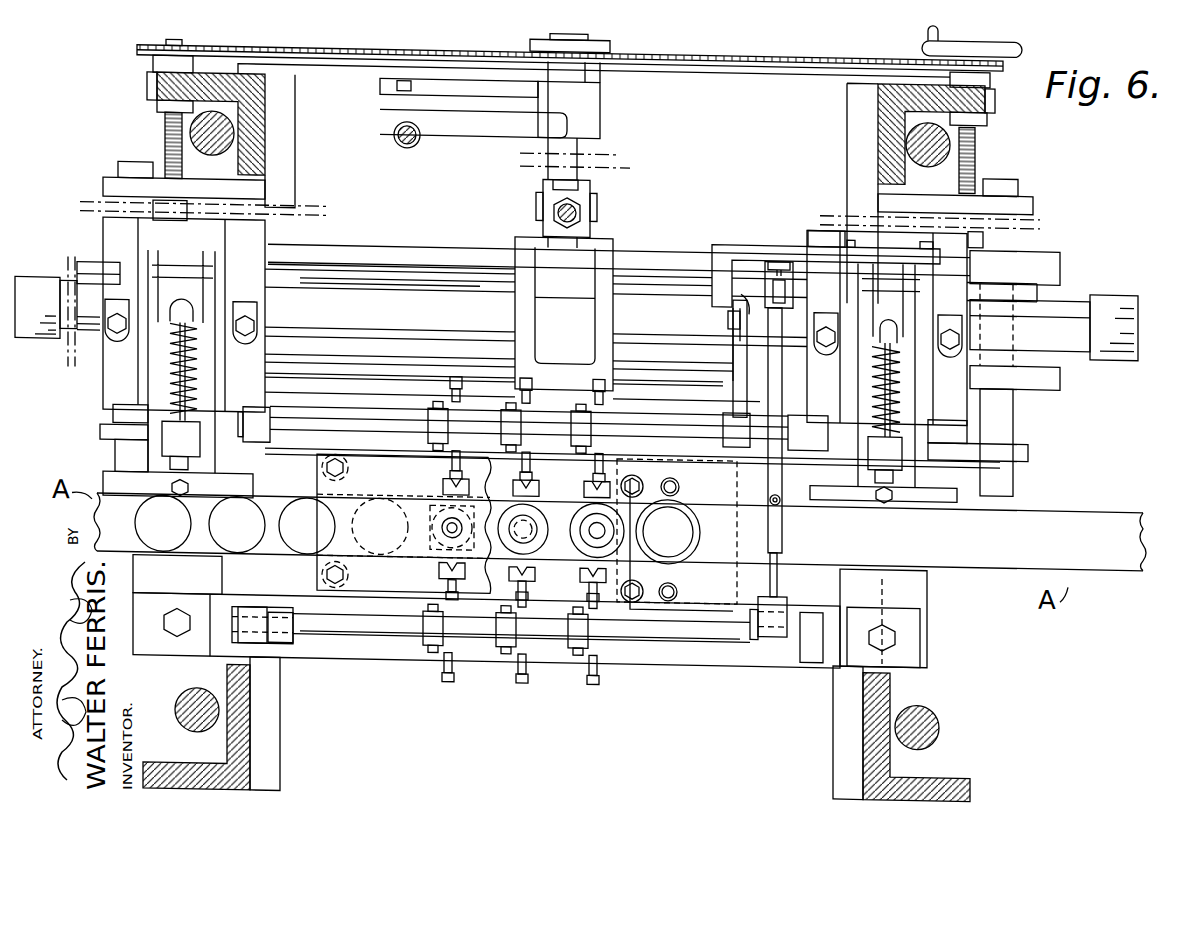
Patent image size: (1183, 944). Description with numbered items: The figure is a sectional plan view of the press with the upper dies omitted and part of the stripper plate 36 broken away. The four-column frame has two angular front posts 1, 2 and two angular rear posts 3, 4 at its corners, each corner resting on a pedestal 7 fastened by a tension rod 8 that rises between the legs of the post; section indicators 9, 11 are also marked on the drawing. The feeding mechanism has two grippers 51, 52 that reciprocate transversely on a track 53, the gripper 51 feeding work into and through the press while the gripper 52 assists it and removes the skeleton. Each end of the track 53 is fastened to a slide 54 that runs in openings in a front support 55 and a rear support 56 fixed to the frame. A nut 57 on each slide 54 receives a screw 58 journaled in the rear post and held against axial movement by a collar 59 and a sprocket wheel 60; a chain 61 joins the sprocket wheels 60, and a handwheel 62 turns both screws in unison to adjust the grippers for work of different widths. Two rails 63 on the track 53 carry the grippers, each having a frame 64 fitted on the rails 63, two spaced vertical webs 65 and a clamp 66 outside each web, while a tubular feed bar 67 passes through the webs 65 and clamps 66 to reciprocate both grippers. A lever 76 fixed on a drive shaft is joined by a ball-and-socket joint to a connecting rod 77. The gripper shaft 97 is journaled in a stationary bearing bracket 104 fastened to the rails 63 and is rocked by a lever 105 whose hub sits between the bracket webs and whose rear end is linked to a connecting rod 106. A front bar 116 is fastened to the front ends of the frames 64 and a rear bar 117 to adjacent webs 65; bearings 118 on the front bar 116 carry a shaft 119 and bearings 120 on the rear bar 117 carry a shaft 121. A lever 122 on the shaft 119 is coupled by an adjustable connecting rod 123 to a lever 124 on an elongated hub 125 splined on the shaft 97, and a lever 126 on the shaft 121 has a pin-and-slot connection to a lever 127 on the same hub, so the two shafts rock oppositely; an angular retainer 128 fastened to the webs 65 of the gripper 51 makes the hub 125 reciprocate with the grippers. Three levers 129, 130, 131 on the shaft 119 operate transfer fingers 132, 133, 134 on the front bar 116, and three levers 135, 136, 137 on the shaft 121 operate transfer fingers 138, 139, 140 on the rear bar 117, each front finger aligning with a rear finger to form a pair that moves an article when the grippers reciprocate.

The angular front post 1 is at (167, 760).
The angular front post 2 is at (940, 777).
The angular rear post 3 is at (157, 82).
The angular rear post 4 is at (985, 83).
The pedestal 7 is at (888, 300).
The tension rod 8 is at (214, 154).
The section line 9 is at (604, 410).
The section line 11 is at (526, 695).
The stripper plate 36 is at (322, 568).
The gripper 51 is at (887, 367).
The gripper 52 is at (184, 357).
The track 53 is at (1040, 275).
The slide 54 is at (128, 168).
The support 55 is at (112, 437).
The support 56 is at (120, 186).
The nut 57 is at (185, 218).
The screw 58 is at (165, 136).
The collar 59 is at (160, 104).
The sprocket wheel 60 is at (167, 63).
The chain 61 is at (232, 45).
The handwheel 62 is at (1005, 33).
The rails 63 is at (425, 252).
The frame 64 is at (917, 580).
The vertical webs 65 is at (140, 408).
The clamp 66 is at (534, 324).
The tubular feed bar 67 is at (1120, 308).
The lever 76 is at (483, 106).
The connecting rod 77 is at (396, 138).
The shaft 97 is at (412, 287).
The stationary bearing bracket 104 is at (565, 305).
The lever 105 is at (595, 276).
The connecting rod 106 is at (590, 206).
The front bar 116 is at (352, 656).
The rear bar 117 is at (310, 452).
The bearing 118 is at (258, 607).
The shaft 119 is at (355, 624).
The bearing 120 is at (533, 429).
The shaft 121 is at (342, 420).
The lever 122 is at (755, 620).
The adjustable connecting rod 123 is at (783, 512).
The lever 124 is at (779, 250).
The elongated hub 125 is at (740, 287).
The lever 126 is at (733, 430).
The lever 127 is at (748, 312).
The angular retainer 128 is at (718, 245).
The lever 129 is at (574, 648).
The lever 130 is at (500, 646).
The lever 131 is at (430, 645).
The transfer finger 132 is at (586, 575).
The transfer finger 133 is at (535, 565).
The transfer finger 134 is at (439, 568).
The lever 135 is at (572, 434).
The lever 136 is at (501, 432).
The lever 137 is at (428, 430).
The transfer finger 138 is at (584, 482).
The transfer finger 139 is at (531, 472).
The transfer finger 140 is at (443, 481).